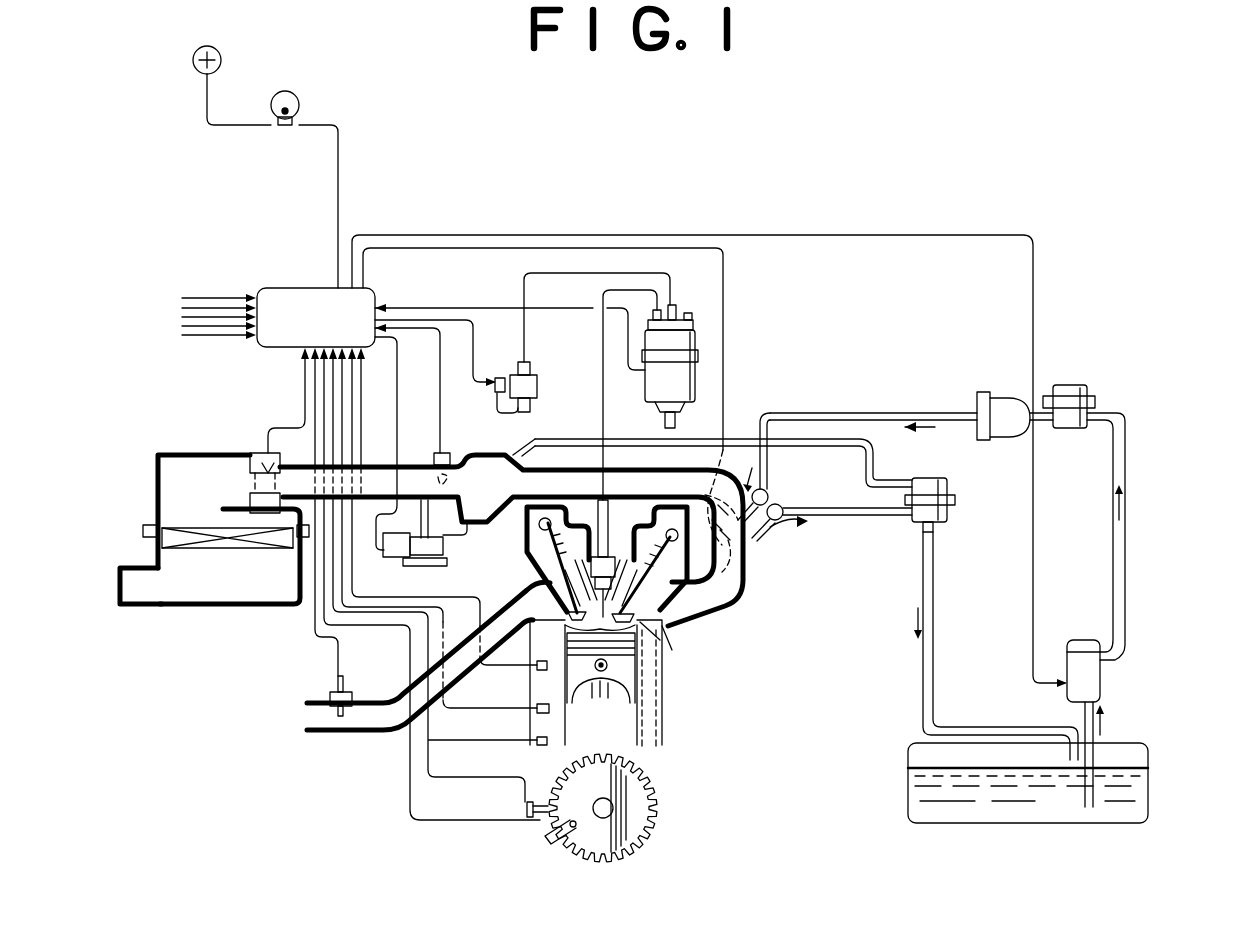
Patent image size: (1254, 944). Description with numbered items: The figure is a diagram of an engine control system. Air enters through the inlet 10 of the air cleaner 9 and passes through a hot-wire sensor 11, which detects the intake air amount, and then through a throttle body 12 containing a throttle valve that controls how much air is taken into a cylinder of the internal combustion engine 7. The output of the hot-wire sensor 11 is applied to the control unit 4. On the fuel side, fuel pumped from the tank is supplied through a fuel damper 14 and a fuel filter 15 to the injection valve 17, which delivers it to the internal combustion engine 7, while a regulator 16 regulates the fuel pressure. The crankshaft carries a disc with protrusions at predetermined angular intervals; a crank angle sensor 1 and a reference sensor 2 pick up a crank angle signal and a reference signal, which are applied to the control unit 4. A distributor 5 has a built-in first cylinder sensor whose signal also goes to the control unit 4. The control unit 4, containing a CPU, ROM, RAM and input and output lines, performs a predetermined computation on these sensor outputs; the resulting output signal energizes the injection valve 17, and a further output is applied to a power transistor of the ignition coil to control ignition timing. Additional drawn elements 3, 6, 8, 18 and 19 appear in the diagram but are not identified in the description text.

The crank angle sensor 1 is at (523, 808).
The reference sensor 2 is at (547, 832).
The electromagnetic valve 3 is at (537, 386).
The control unit 4 is at (300, 289).
The distributor 5 is at (697, 377).
The ignition switch / lamp 6 is at (300, 103).
The internal combustion engine 7 is at (657, 625).
The spark plug 8 is at (618, 500).
The air cleaner 9 is at (205, 612).
The inlet 10 is at (118, 595).
The hot-wire sensor 11 is at (258, 452).
The throttle body 12 is at (448, 453).
The fuel damper 14 is at (1085, 387).
The fuel filter 15 is at (1005, 405).
The regulator 16 is at (947, 504).
The injection valve 17 is at (747, 575).
The fuel tank 18 is at (1150, 750).
The crank gear 19 is at (633, 828).